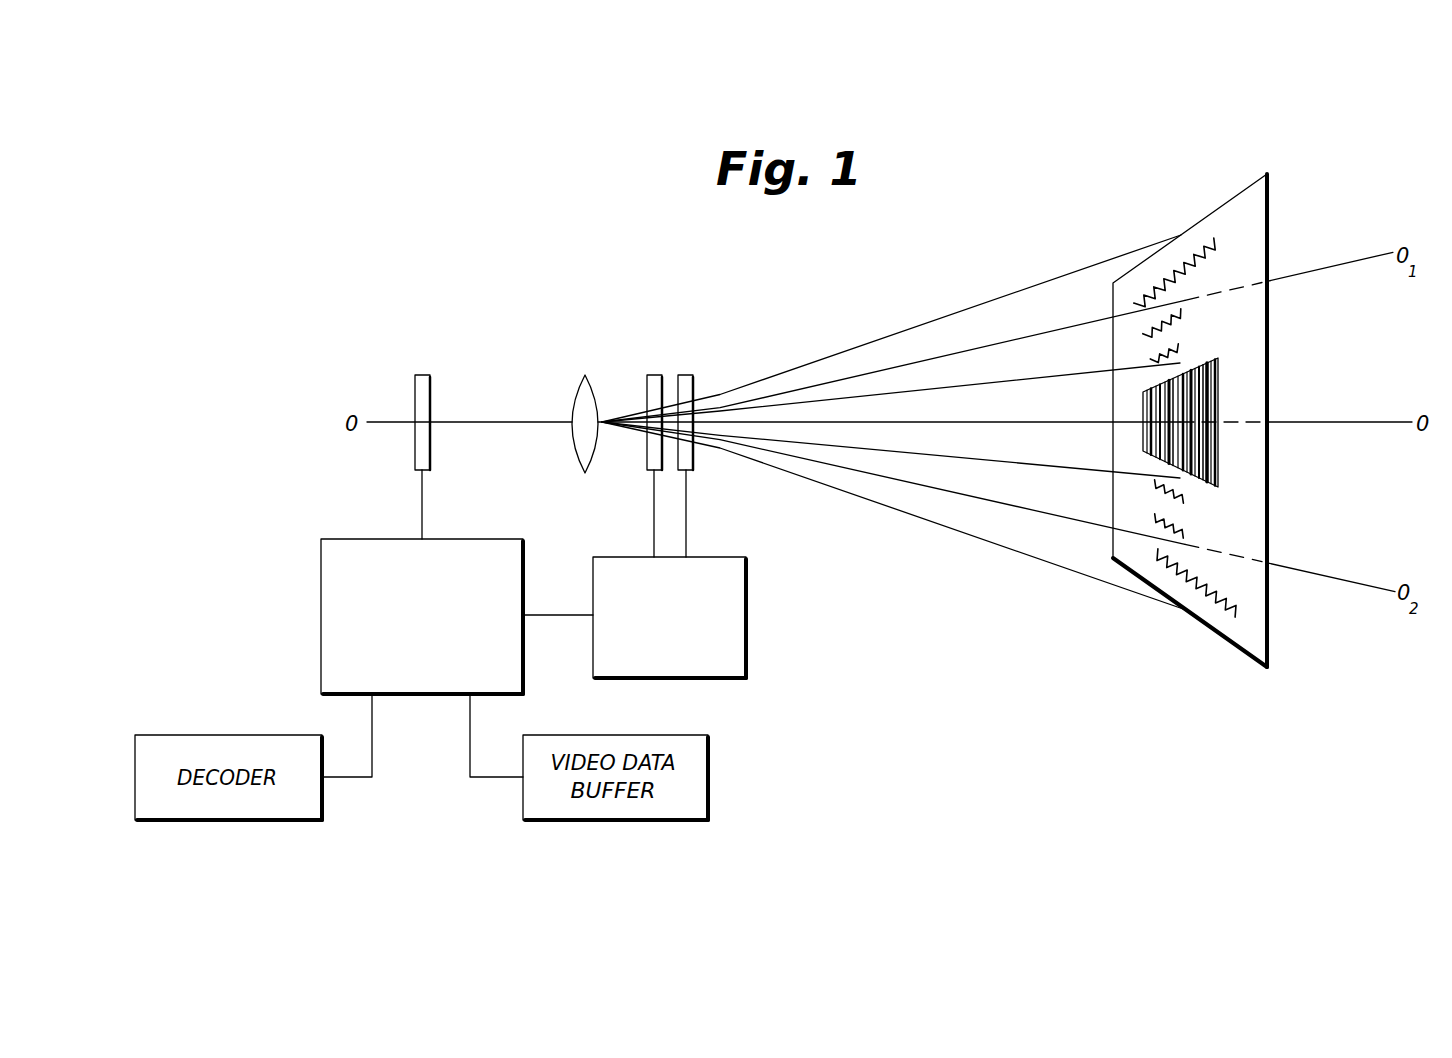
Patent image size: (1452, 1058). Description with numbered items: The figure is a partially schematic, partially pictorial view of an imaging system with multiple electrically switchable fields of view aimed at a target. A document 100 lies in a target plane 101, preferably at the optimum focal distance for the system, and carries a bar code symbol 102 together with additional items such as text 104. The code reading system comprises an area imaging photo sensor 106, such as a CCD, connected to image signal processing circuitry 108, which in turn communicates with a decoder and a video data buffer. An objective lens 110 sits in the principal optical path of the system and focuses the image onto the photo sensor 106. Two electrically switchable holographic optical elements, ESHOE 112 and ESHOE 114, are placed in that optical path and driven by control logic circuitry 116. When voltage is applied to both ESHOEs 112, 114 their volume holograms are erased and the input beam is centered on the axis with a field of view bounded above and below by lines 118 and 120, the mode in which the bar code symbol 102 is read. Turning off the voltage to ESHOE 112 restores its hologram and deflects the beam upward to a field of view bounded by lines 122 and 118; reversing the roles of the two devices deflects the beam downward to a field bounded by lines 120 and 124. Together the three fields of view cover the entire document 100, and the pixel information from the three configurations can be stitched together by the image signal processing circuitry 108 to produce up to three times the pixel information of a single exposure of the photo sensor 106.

The document 100 is at (1241, 457).
The target plane 101 is at (1235, 645).
The bar code symbol 102 is at (1218, 387).
The text 104 is at (1217, 242).
The area imaging photo sensor 106 is at (422, 372).
The image signal processing circuitry 108 is at (320, 617).
The objective lens 110 is at (585, 372).
The ESHOE 112 is at (654, 373).
The ESHOE 114 is at (688, 372).
The control logic circuitry 116 is at (746, 615).
The line 118 is at (973, 384).
The line 120 is at (978, 460).
The line 122 is at (973, 306).
The line 124 is at (977, 537).